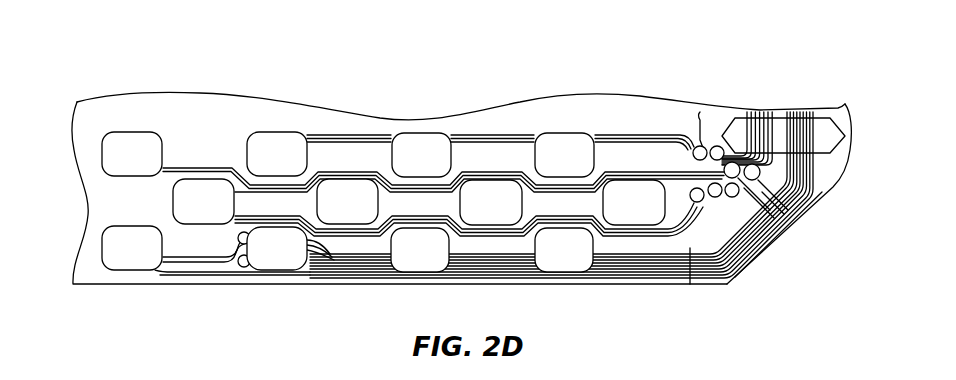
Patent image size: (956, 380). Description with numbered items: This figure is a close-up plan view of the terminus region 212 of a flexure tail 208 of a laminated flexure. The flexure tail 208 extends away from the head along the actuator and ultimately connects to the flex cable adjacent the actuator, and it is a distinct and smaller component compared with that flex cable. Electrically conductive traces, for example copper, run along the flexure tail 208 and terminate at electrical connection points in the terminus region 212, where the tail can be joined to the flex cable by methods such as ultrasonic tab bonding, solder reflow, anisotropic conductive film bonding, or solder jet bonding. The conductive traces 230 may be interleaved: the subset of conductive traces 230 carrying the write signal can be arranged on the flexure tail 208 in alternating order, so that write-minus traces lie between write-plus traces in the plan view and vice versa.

The terminus region 212 is at (467, 127).
The conductive traces 230 is at (745, 110).
The flexure tail 208 is at (823, 167).